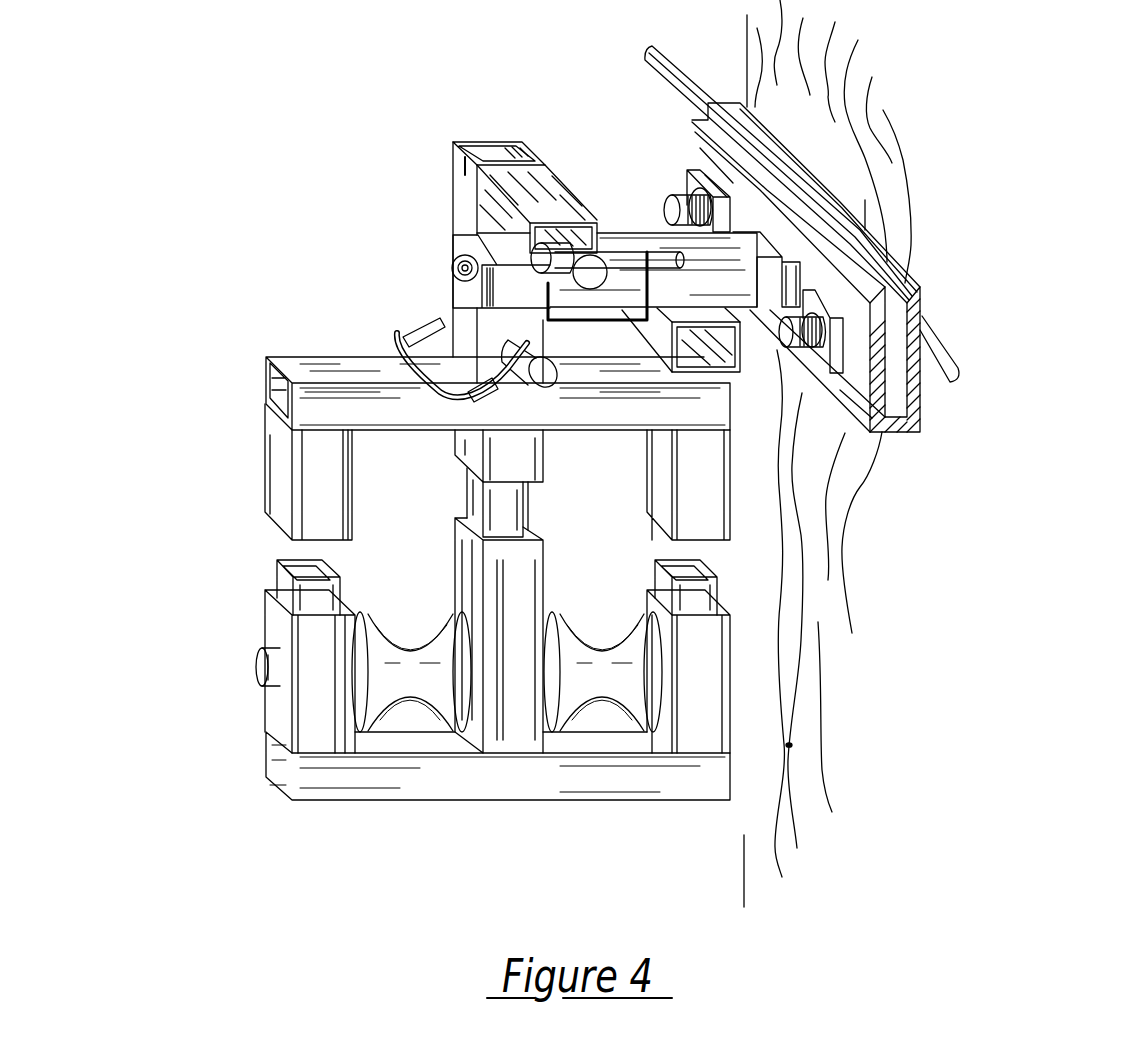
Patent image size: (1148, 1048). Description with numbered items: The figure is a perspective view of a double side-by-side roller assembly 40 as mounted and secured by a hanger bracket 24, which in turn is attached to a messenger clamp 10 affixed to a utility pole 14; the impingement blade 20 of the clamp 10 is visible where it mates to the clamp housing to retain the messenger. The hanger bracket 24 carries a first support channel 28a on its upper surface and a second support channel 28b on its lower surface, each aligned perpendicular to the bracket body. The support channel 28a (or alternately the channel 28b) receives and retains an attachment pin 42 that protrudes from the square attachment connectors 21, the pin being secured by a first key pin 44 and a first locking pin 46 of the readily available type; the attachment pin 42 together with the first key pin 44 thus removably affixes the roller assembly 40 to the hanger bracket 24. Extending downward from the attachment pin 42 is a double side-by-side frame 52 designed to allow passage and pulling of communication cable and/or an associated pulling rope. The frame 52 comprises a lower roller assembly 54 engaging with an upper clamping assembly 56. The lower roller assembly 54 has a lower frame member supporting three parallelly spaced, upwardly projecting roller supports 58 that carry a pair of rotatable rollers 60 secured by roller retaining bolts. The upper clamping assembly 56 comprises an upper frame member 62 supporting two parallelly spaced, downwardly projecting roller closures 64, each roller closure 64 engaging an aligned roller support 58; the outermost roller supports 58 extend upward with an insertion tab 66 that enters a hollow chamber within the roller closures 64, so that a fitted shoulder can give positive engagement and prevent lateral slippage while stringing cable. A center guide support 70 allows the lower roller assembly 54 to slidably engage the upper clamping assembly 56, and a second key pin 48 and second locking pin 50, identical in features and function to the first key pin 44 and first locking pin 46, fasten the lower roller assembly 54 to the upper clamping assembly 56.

The messenger clamp 10 is at (922, 268).
The utility pole 14 is at (852, 55).
The impingement blade 20 is at (877, 407).
The square attachment connectors 21 is at (478, 143).
The hanger bracket 24 is at (688, 252).
The first support channel 28a is at (565, 195).
The second support channel 28b is at (740, 358).
The double side-by-side roller assembly 40 is at (205, 773).
The attachment pin 42 is at (530, 225).
The first key pin 44 is at (455, 236).
The first locking pin 46 is at (620, 267).
The second key pin 48 is at (540, 352).
The second locking pin 50 is at (392, 333).
The double side-by-side frame 52 is at (285, 363).
The lower roller assembly 54 is at (790, 745).
The upper clamping assembly 56 is at (723, 425).
The roller supports 58 is at (280, 710).
The rotatable rollers 60 is at (408, 700).
The upper frame member 62 is at (272, 402).
The roller closures 64 is at (342, 495).
The insertion tab 66 is at (277, 573).
The center guide support 70 is at (523, 458).